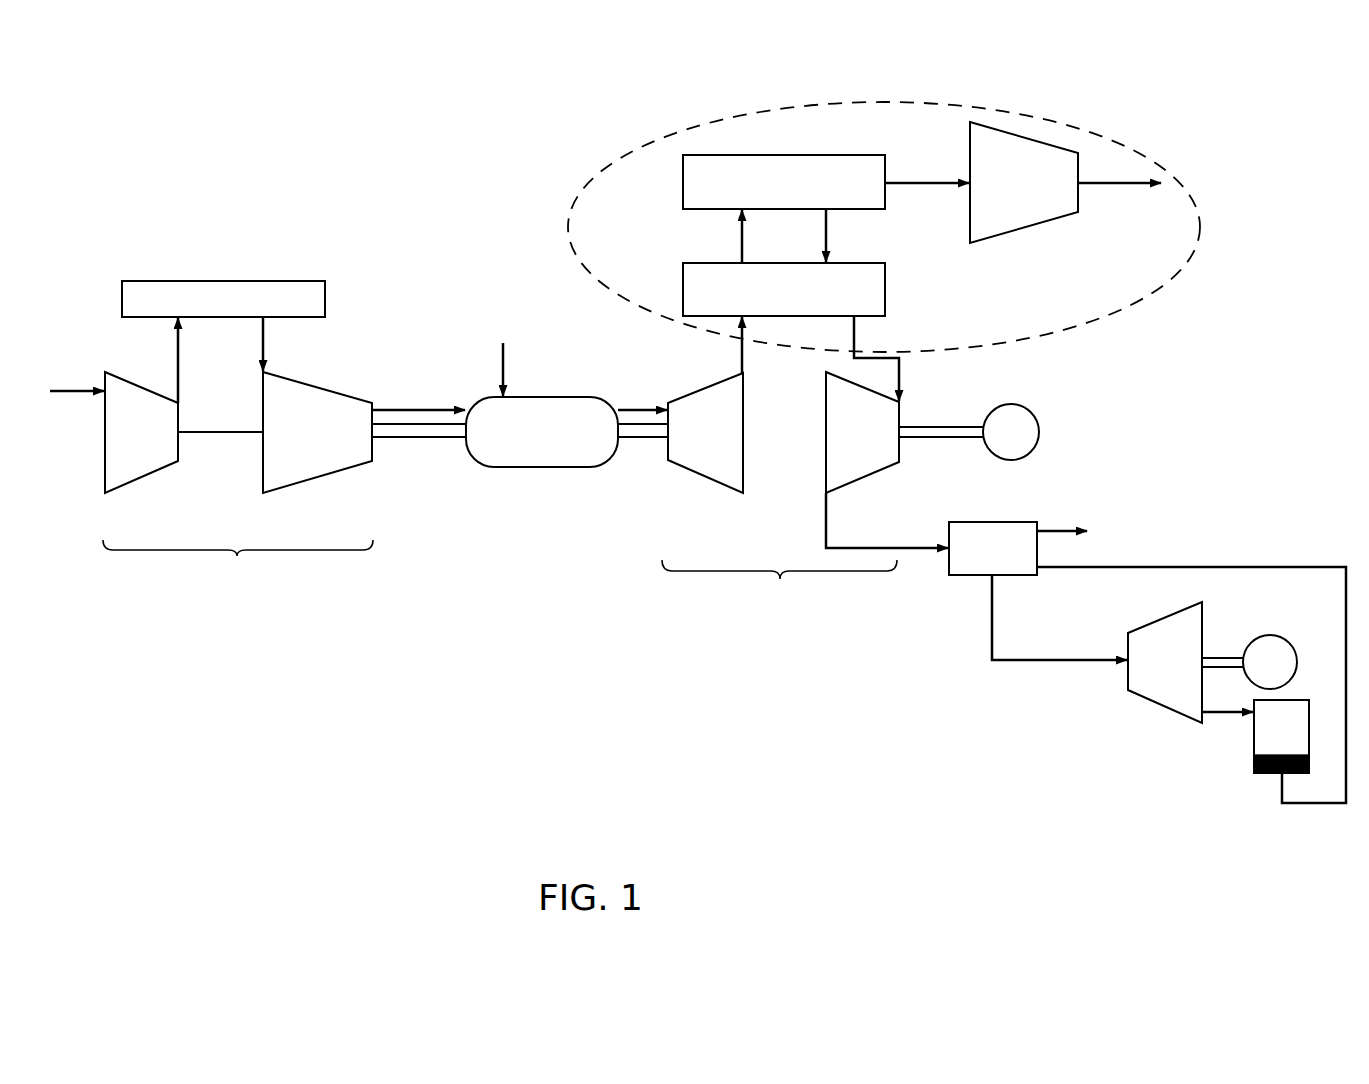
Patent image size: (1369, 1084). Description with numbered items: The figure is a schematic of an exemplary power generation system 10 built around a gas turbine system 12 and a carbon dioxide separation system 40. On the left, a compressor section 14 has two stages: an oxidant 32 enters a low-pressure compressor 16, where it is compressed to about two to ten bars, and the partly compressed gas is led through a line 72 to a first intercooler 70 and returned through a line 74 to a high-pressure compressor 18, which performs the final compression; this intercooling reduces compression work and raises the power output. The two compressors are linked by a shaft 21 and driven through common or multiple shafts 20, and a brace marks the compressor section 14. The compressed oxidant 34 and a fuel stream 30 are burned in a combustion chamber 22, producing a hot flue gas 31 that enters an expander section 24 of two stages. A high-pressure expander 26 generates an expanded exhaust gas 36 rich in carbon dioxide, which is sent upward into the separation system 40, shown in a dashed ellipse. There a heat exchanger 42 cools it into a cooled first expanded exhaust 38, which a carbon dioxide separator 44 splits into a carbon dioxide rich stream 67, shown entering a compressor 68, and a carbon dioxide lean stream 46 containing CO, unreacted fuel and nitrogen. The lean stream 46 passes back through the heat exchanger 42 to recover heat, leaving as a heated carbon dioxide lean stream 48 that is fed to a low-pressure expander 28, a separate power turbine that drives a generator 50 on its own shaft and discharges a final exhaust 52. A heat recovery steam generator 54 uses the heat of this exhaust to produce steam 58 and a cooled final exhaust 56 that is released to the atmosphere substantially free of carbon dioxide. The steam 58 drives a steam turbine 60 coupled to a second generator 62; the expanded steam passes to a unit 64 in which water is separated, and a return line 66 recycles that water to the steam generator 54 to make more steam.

The power generation system 10 is at (228, 743).
The gas turbine system 12 is at (441, 312).
The compressor section 14 is at (238, 563).
The low-pressure compressor 16 is at (153, 482).
The high-pressure compressor 18 is at (331, 482).
The shafts 20 is at (415, 441).
The shaft 21 is at (202, 430).
The combustion chamber 22 is at (539, 470).
The expander section 24 is at (779, 584).
The high-pressure expander 26 is at (702, 486).
The low-pressure expander 28 is at (880, 476).
The fuel stream 30 is at (503, 364).
The hot flue gas 31 is at (636, 406).
The oxidant 32 is at (70, 398).
The compressed oxidant 34 is at (400, 408).
The expanded exhaust gas 36 is at (742, 354).
The cooled first expanded exhaust 38 is at (742, 244).
The CO2 separation system 40 is at (656, 139).
The heat exchanger 42 is at (885, 291).
The CO2 separator 44 is at (848, 155).
The CO2 lean stream 46 is at (826, 233).
The heated CO2 lean stream 48 is at (856, 336).
The generator 50 is at (1038, 418).
The final exhaust 52 is at (908, 547).
The heat recovery steam generator 54 is at (960, 576).
The cooled final exhaust 56 is at (1050, 530).
The steam 58 is at (1033, 662).
The steam turbine 60 is at (1162, 710).
The generator 62 is at (1271, 635).
The condenser 64 is at (1254, 733).
The condensate return line 66 is at (1315, 804).
The CO2 rich stream 67 is at (926, 185).
The CO2 compressor 68 is at (970, 148).
The first intercooler 70 is at (224, 280).
The line from LPC to intercooler 72 is at (178, 354).
The line from intercooler to HPC 74 is at (263, 338).